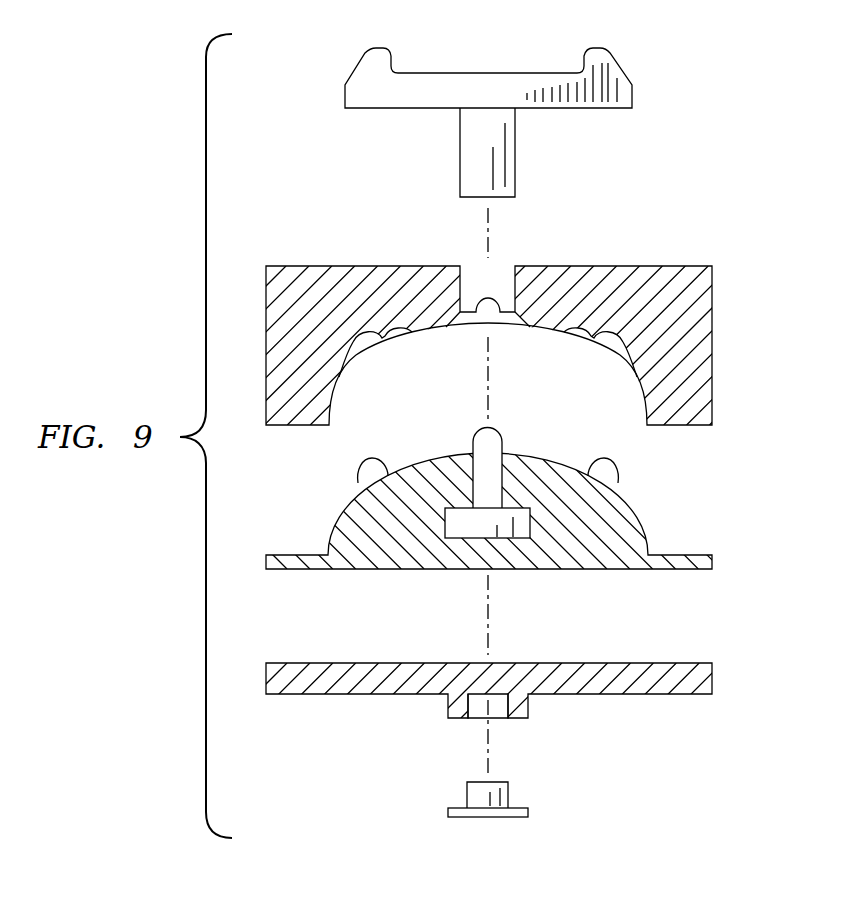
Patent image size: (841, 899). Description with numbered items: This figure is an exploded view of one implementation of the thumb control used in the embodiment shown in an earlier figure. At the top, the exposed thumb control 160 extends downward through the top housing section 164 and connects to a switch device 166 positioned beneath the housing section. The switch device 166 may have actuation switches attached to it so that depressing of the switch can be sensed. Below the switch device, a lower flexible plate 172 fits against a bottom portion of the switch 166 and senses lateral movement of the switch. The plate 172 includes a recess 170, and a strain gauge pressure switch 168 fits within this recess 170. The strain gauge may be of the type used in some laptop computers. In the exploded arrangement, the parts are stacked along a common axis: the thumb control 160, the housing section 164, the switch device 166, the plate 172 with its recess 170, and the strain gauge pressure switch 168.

The thumb control 160 is at (617, 63).
The top housing section 164 is at (662, 266).
The switch device 166 is at (530, 520).
The lower flexible plate 172 is at (662, 663).
The recess 170 is at (493, 718).
The strain gauge pressure switch 168 is at (507, 808).